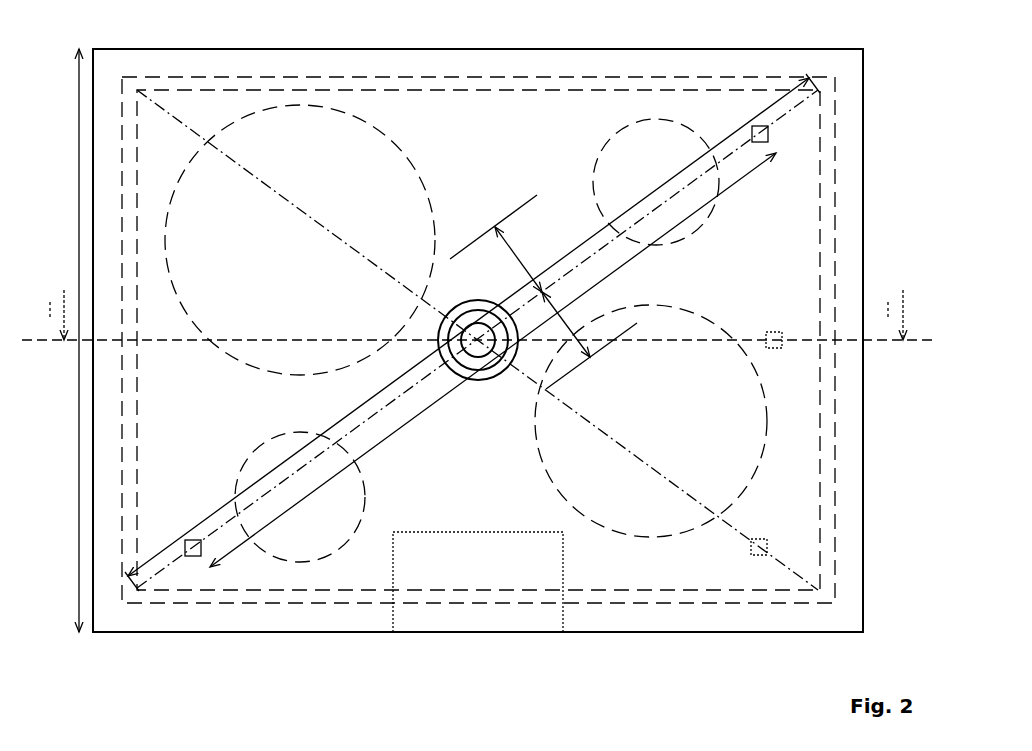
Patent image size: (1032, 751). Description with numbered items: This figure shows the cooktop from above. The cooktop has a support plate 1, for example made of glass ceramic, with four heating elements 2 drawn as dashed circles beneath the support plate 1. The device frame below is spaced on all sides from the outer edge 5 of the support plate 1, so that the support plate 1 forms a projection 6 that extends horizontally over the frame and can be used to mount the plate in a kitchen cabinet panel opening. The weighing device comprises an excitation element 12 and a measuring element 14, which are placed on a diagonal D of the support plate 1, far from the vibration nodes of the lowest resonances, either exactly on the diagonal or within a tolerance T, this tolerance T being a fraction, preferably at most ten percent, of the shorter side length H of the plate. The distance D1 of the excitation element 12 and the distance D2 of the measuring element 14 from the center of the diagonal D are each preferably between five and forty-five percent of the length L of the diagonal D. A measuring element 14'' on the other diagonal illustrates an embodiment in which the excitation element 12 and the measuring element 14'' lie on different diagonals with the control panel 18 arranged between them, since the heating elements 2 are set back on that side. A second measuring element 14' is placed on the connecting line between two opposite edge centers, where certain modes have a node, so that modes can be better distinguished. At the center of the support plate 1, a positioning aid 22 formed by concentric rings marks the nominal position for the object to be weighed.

The support plate 1 is at (478, 297).
The heating elements 2 is at (290, 194).
The outer edge 5 is at (478, 320).
The projection 6 is at (478, 306).
The excitation element 12 is at (111, 508).
The measuring element 14 is at (785, 80).
The second measuring element 14' is at (850, 271).
The measuring element 14'' is at (842, 504).
The control panel 18 is at (429, 606).
The positioning aid 22 is at (421, 299).
The shorter side length H is at (53, 340).
The length of the diagonal L is at (468, 327).
The tolerance T is at (547, 292).
The diagonal D is at (289, 487).
The distance of the excitation element from the center of the diagonal D1 is at (574, 421).
The distance of the measuring element from the center of the diagonal D2 is at (667, 205).